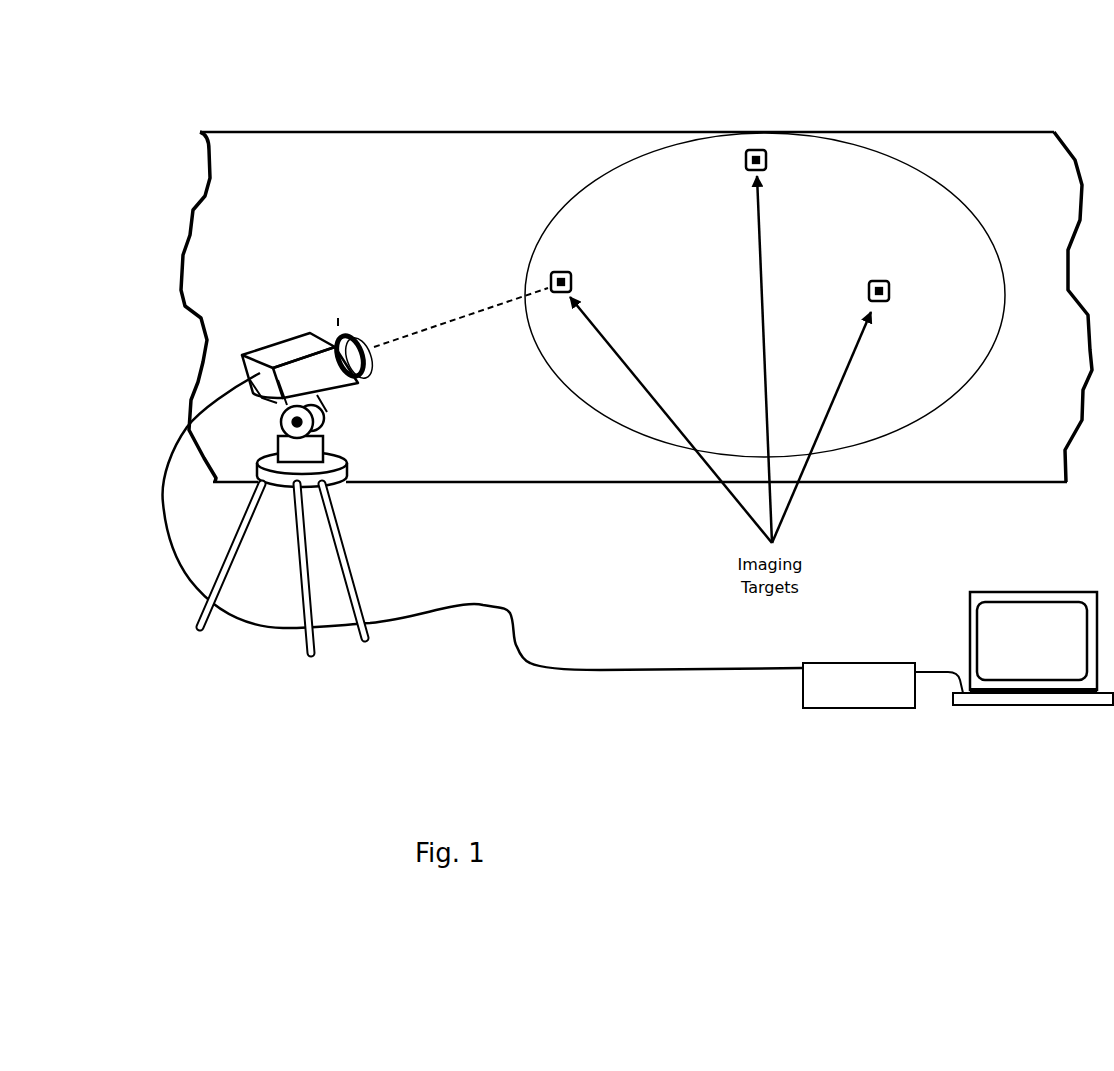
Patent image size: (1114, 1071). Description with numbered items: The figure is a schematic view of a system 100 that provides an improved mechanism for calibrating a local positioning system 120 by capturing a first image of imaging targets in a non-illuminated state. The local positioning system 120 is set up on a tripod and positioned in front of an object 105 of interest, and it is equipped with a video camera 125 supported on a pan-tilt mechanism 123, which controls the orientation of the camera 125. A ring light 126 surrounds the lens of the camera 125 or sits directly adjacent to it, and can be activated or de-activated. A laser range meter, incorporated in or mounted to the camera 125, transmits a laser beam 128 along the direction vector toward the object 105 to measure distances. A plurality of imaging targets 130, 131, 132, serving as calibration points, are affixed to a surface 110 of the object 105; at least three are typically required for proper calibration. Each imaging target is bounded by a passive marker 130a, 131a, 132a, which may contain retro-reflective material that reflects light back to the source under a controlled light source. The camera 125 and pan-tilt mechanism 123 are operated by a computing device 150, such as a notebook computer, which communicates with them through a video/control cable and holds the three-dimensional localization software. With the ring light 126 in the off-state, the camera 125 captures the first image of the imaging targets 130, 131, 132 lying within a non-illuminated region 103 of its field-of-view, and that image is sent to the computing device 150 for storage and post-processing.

The system 100 is at (1105, 82).
The non-illuminated region 103 is at (640, 148).
The object 105 is at (200, 128).
The surface 110 is at (485, 160).
The local positioning system 120 is at (350, 428).
The pan-tilt mechanism 123 is at (270, 420).
The video camera 125 is at (292, 327).
The ring light 126 is at (356, 330).
The laser beam 128 is at (488, 297).
The imaging target 130 is at (561, 271).
The passive marker 130a is at (573, 282).
The imaging target 131 is at (757, 150).
The passive marker 131a is at (767, 162).
The imaging target 132 is at (882, 281).
The passive marker 132a is at (890, 292).
The computing device 150 is at (1004, 591).